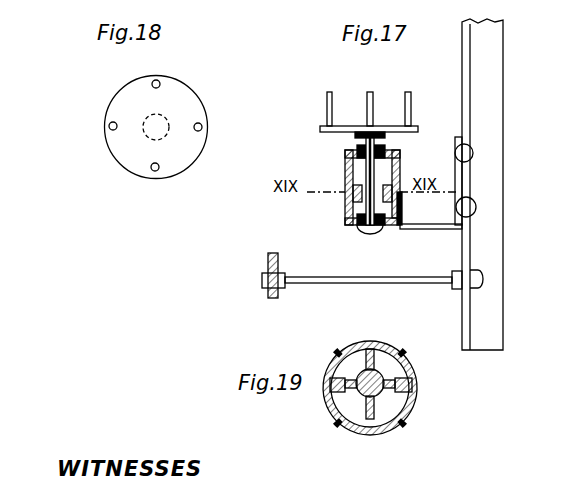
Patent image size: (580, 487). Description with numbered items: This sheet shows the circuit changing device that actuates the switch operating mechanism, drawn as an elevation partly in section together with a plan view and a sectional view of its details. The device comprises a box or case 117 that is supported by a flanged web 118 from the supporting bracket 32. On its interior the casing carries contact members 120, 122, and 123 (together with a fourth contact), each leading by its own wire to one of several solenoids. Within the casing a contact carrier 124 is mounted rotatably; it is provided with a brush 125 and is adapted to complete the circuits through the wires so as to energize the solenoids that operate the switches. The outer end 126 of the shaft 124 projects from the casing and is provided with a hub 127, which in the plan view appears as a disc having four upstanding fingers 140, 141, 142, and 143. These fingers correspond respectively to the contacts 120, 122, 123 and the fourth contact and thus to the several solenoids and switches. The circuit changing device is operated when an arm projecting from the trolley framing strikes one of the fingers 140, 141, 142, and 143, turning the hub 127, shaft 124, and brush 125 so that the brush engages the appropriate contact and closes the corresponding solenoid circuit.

In FIG. 17, the supporting bracket 32 is at (493, 181).
In FIG. 17, the box or case 117 is at (355, 203).
In FIG. 17, the flanged web 118 is at (425, 215).
In FIG. 19, the contact member 120 is at (385, 378).
In FIG. 19, the contact member 122 is at (366, 402).
In FIG. 19, the contact member 123 is at (394, 390).
In FIG. 17, the contact carrier 124 is at (369, 172).
In FIG. 19, the contact carrier 124 is at (391, 425).
In FIG. 17, the brush 125 is at (358, 198).
In FIG. 19, the brush 125 is at (357, 380).
In FIG. 17, the outer end of the shaft 126 is at (386, 148).
In FIG. 17, the hub 127 is at (342, 127).
In FIG. 18, the upstanding finger 140 is at (158, 81).
In FIG. 18, the upstanding finger 141 is at (109, 128).
In FIG. 18, the upstanding finger 142 is at (154, 171).
In FIG. 18, the upstanding finger 143 is at (203, 126).